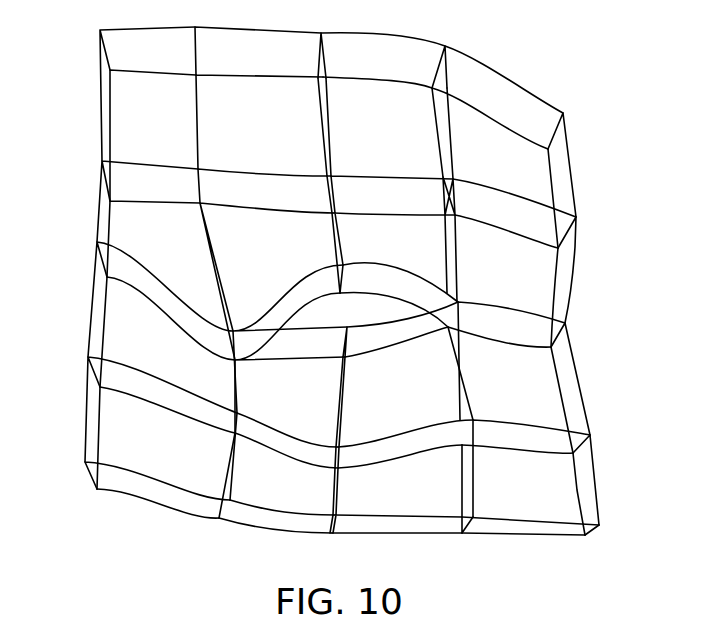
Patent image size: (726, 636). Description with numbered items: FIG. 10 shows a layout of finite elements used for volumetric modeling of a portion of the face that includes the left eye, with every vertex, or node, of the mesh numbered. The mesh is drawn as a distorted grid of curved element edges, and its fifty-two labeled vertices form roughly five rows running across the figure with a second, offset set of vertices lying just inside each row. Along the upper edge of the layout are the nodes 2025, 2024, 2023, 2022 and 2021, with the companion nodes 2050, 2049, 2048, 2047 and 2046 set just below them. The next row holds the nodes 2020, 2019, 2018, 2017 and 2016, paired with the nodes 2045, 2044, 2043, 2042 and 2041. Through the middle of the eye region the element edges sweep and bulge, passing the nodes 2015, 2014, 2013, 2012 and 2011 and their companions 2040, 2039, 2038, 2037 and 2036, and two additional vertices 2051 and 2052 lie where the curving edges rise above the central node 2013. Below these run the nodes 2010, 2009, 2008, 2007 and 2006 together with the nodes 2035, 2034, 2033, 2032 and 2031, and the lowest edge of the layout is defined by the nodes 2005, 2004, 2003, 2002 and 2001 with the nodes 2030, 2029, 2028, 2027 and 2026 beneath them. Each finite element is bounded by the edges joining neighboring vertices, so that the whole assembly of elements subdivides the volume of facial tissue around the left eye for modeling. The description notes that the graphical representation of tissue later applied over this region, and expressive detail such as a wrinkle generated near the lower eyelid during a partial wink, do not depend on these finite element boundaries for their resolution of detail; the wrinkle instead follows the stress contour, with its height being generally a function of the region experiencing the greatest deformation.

The mesh node 2001 is at (618, 518).
The mesh node 2002 is at (530, 509).
The mesh node 2003 is at (396, 512).
The mesh node 2004 is at (281, 501).
The mesh node 2005 is at (130, 473).
The mesh node 2006 is at (608, 467).
The mesh node 2007 is at (531, 454).
The mesh node 2008 is at (404, 440).
The mesh node 2009 is at (284, 447).
The mesh node 2010 is at (136, 400).
The mesh node 2011 is at (584, 367).
The mesh node 2012 is at (511, 347).
The mesh node 2013 is at (397, 329).
The mesh node 2014 is at (288, 339).
The mesh node 2015 is at (136, 291).
The mesh node 2016 is at (594, 258).
The mesh node 2017 is at (509, 185).
The mesh node 2018 is at (390, 181).
The mesh node 2019 is at (264, 173).
The mesh node 2020 is at (124, 191).
The mesh node 2021 is at (584, 155).
The mesh node 2022 is at (497, 70).
The mesh node 2023 is at (381, 42).
The mesh node 2024 is at (258, 39).
The mesh node 2025 is at (147, 83).
The mesh node 2026 is at (540, 548).
The mesh node 2027 is at (457, 503).
The mesh node 2028 is at (383, 547).
The mesh node 2029 is at (265, 532).
The mesh node 2030 is at (133, 503).
The mesh node 2031 is at (553, 494).
The mesh node 2032 is at (490, 461).
The mesh node 2033 is at (374, 480).
The mesh node 2034 is at (255, 475).
The mesh node 2035 is at (166, 438).
The mesh node 2036 is at (535, 400).
The mesh node 2037 is at (499, 366).
The mesh node 2038 is at (392, 387).
The mesh node 2039 is at (290, 363).
The mesh node 2040 is at (166, 332).
The mesh node 2041 is at (530, 297).
The mesh node 2042 is at (501, 248).
The mesh node 2043 is at (393, 242).
The mesh node 2044 is at (267, 269).
The mesh node 2045 is at (153, 239).
The mesh node 2046 is at (586, 187).
The mesh node 2047 is at (461, 133).
The mesh node 2048 is at (375, 115).
The mesh node 2049 is at (259, 111).
The mesh node 2050 is at (153, 125).
The mesh node 2051 is at (399, 270).
The mesh node 2052 is at (394, 299).